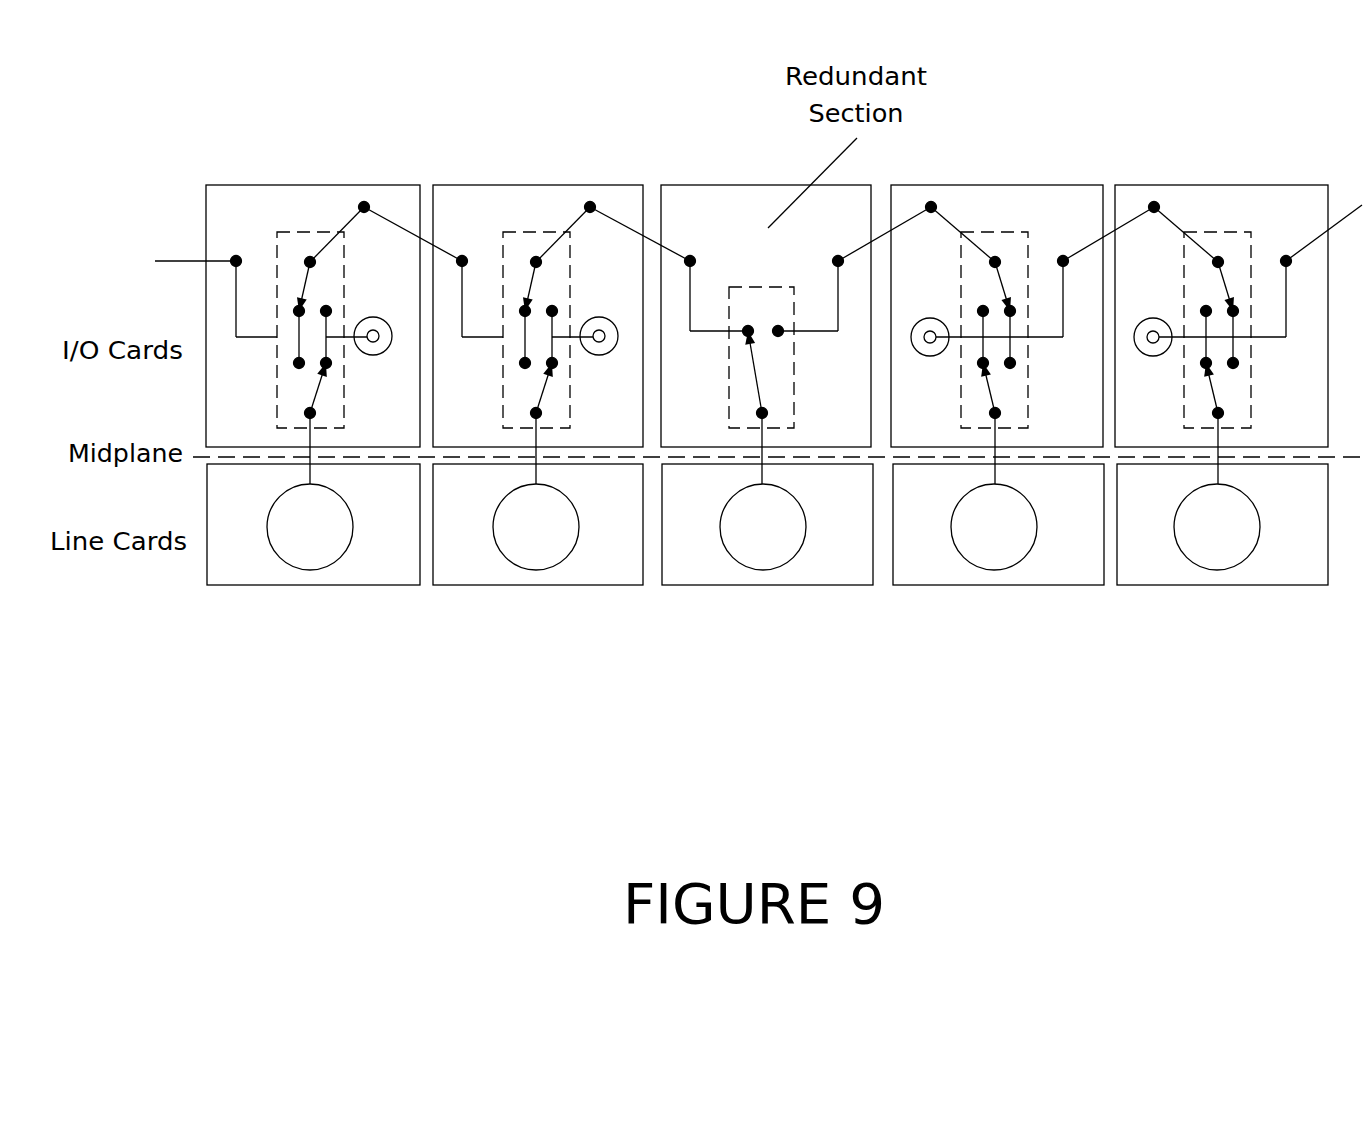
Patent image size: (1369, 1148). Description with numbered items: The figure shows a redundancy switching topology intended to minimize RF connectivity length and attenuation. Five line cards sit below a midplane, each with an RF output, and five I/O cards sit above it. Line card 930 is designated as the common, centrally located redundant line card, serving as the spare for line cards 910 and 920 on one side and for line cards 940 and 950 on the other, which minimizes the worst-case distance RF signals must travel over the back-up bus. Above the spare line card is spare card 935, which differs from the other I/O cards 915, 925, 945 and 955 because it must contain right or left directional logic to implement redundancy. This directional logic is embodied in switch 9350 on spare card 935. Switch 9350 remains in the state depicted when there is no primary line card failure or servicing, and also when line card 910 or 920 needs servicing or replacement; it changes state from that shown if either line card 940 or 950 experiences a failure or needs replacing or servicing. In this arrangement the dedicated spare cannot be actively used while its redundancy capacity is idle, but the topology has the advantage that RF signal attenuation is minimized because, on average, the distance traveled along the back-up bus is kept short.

The line card 910 is at (313, 524).
The line card 920 is at (538, 524).
The redundant line card 930 is at (767, 524).
The line card 940 is at (998, 524).
The line card 950 is at (1222, 524).
The I/O card 915 is at (313, 334).
The I/O card 925 is at (538, 334).
The spare card 935 is at (766, 334).
The I/O card 945 is at (997, 334).
The I/O card 955 is at (1221, 334).
The switch 9350 is at (773, 287).